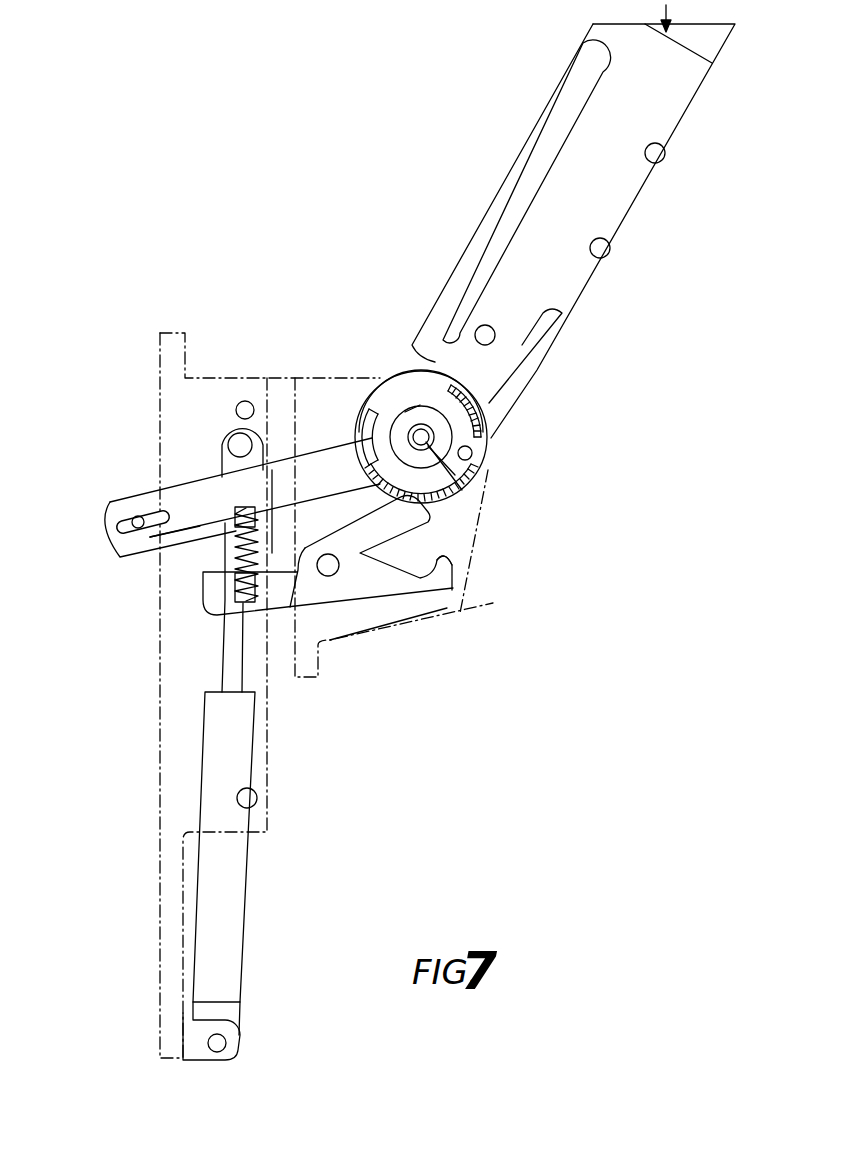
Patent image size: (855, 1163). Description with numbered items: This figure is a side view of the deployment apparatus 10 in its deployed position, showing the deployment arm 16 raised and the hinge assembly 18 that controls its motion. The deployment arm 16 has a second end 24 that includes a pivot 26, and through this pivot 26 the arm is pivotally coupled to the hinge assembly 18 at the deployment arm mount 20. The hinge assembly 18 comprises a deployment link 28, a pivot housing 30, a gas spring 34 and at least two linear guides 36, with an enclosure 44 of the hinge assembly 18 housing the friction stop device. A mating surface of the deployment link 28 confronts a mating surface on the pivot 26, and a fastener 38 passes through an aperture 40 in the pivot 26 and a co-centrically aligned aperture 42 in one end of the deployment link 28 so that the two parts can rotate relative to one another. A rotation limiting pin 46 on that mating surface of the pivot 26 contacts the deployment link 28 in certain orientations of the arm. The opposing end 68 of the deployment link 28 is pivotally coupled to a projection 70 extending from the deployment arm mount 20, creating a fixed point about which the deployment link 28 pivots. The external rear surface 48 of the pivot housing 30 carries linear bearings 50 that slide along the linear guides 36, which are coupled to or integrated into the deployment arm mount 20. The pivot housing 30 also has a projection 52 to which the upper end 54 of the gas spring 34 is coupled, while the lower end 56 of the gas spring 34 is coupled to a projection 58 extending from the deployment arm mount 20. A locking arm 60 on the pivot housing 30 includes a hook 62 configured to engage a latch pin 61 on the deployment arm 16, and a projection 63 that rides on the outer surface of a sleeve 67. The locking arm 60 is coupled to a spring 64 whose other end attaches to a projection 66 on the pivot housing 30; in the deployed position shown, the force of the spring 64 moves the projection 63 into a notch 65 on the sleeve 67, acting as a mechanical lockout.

The deployment apparatus 10 is at (700, 468).
The deployment arm 16 is at (663, 92).
The hinge assembly 18 is at (130, 640).
The deployment arm mount 20 is at (160, 836).
The second end 24 is at (490, 447).
The pivot 26 is at (489, 440).
The deployment link 28 is at (318, 470).
The pivot housing 30 is at (362, 392).
The gas spring 34 is at (205, 760).
The linear guides 36 is at (247, 400).
The fastener 38 is at (472, 456).
The aperture 40 is at (455, 476).
The aperture 42 is at (462, 492).
The enclosure 44 is at (322, 403).
The rotation limiting pin 46 is at (492, 428).
The external rear surface 48 is at (292, 420).
The linear bearings 50 is at (233, 532).
The projection 52 is at (233, 430).
The upper end 54 is at (230, 440).
The lower end 56 is at (217, 1053).
The projection 58 is at (200, 1052).
The locking arm 60 is at (360, 578).
The latch pin 61 is at (496, 335).
The hook 62 is at (455, 593).
The projection 63 is at (442, 542).
The spring 64 is at (252, 548).
The notch 65 is at (406, 410).
The projection 66 is at (223, 512).
The sleeve 67 is at (430, 347).
The opposing end 68 is at (110, 507).
The projection 70 is at (138, 495).